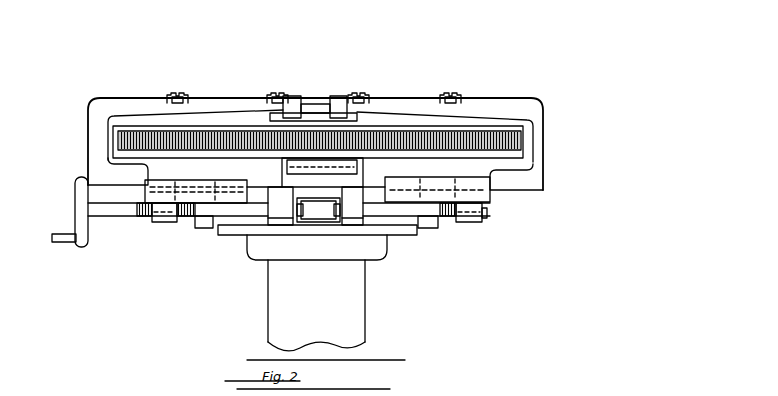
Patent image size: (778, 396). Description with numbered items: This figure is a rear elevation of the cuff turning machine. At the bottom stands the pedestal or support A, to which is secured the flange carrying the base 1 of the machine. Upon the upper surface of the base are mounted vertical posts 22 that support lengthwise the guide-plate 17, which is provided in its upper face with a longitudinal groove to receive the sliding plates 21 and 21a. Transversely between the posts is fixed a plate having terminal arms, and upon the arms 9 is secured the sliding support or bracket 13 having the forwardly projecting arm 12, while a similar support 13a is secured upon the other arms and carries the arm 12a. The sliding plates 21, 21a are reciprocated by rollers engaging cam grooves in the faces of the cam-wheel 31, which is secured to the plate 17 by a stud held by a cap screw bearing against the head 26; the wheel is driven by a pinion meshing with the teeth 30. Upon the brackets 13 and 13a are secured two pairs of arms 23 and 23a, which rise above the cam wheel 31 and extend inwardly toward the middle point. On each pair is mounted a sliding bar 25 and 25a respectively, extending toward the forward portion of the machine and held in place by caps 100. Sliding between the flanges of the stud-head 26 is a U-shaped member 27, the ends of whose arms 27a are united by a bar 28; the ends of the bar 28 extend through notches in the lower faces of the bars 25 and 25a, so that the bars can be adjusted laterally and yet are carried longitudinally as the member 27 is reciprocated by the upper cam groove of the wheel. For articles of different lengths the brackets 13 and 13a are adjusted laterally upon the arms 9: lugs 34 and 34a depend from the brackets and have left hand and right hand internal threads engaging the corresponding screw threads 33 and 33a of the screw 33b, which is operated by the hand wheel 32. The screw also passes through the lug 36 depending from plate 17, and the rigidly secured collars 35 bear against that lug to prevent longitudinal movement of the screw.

The base 1 is at (392, 236).
The terminal arm 9 is at (146, 192).
The forwardly projecting arm 12 is at (204, 229).
The arm 12a is at (430, 229).
The sliding support or bracket 13 is at (105, 178).
The sliding support 13a is at (522, 182).
The guide-plate 17 is at (356, 186).
The sliding plate 21 is at (284, 164).
The sliding plate 21a is at (248, 184).
The vertical posts 22 is at (276, 198).
The pair of arms 23 is at (120, 108).
The pair of arms 23a is at (505, 106).
The sliding bar 25 is at (186, 96).
The sliding bar 25a is at (366, 96).
The stud-head 26 is at (278, 118).
The U-shaped member 27 is at (326, 114).
The carriage post 27a is at (293, 97).
The bar 28 is at (311, 104).
The teeth 30 is at (535, 140).
The cam-wheel 31 is at (505, 152).
The hand wheel 32 is at (56, 238).
The screw thread 33 is at (142, 216).
The screw thread 33a is at (452, 217).
The screw 33b is at (122, 210).
The lug 34 is at (164, 223).
The lug 34a is at (483, 221).
The collars 35 is at (290, 222).
The lug 36 is at (318, 214).
The caps 100 is at (175, 93).
The pedestal or support A is at (357, 321).